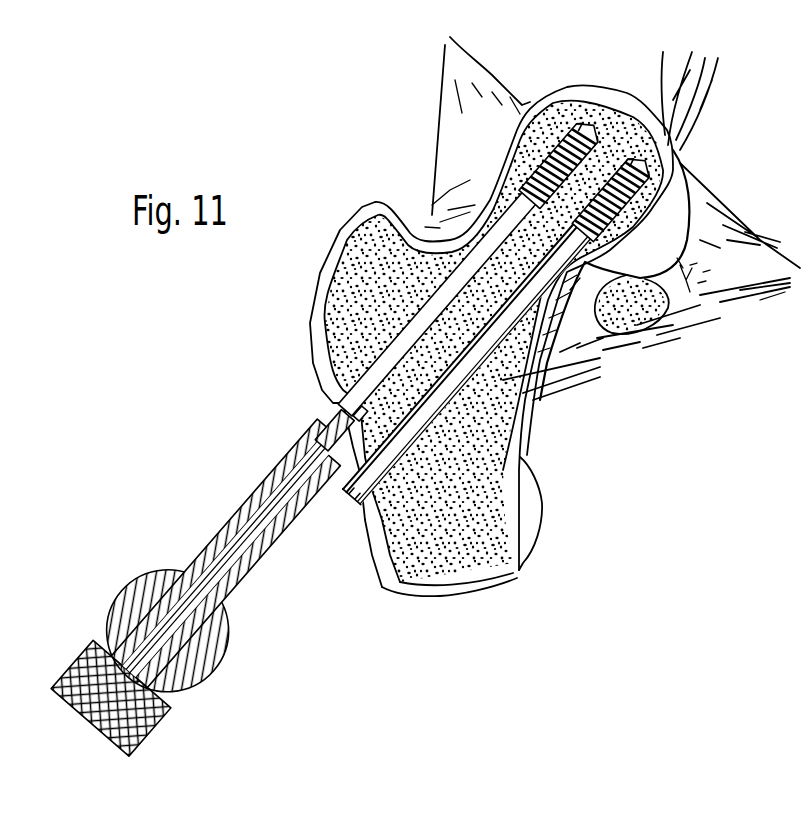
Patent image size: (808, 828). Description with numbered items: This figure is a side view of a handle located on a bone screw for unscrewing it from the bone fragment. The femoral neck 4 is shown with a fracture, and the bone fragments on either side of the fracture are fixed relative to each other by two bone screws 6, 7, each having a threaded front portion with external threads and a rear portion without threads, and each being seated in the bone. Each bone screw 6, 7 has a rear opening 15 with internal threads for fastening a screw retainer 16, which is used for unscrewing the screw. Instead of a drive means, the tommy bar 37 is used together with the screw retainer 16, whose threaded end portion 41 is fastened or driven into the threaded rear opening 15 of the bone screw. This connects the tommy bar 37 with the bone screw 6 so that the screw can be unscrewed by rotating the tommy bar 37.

The femoral neck 4 is at (411, 200).
The bone screw 6 is at (440, 293).
The bone screw 7 is at (483, 350).
The rear opening 15 is at (345, 402).
The screw retainer 16 is at (281, 489).
The tommy bar 37 is at (230, 517).
The threaded end portion 41 is at (319, 464).